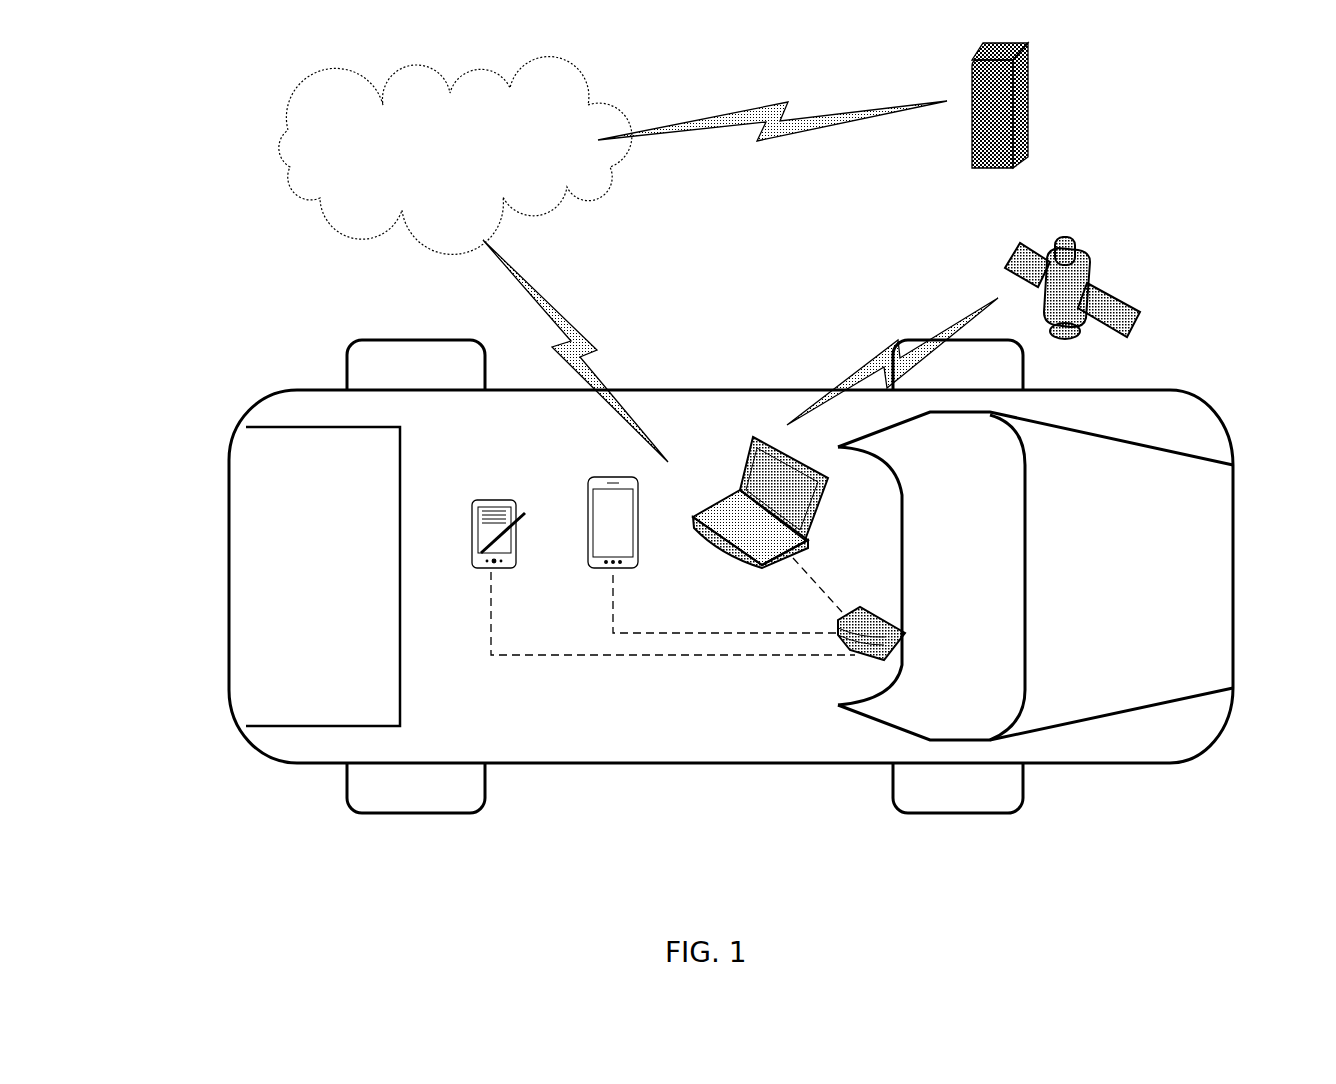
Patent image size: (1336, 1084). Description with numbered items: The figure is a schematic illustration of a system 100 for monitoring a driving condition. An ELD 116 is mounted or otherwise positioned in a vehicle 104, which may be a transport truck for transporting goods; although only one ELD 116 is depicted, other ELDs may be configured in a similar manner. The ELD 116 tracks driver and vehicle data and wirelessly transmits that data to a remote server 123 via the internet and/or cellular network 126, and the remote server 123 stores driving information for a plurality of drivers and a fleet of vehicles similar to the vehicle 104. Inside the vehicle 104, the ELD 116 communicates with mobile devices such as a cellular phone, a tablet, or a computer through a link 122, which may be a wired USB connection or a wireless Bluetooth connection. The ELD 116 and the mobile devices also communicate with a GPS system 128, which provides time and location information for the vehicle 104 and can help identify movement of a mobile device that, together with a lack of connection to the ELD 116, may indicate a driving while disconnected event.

The system 100 is at (216, 78).
The vehicle 104 is at (1204, 388).
The ELD 116 is at (882, 656).
The link 122 is at (543, 658).
The remote server 123 is at (1030, 93).
The network 126 is at (565, 190).
The GPS system 128 is at (1090, 257).